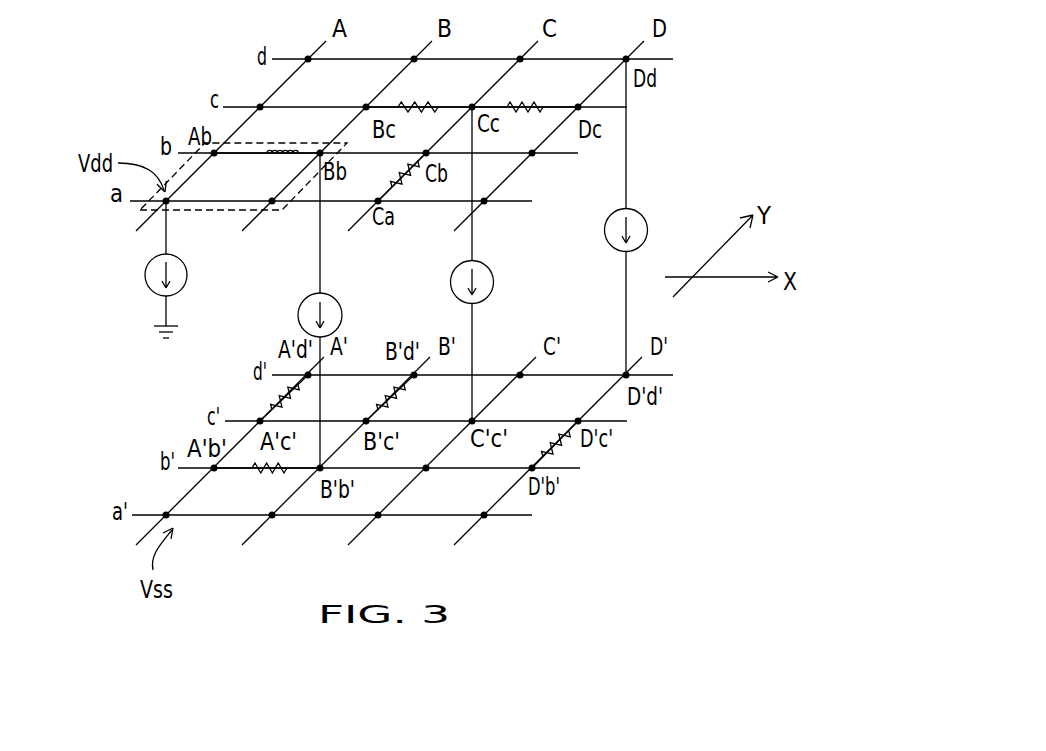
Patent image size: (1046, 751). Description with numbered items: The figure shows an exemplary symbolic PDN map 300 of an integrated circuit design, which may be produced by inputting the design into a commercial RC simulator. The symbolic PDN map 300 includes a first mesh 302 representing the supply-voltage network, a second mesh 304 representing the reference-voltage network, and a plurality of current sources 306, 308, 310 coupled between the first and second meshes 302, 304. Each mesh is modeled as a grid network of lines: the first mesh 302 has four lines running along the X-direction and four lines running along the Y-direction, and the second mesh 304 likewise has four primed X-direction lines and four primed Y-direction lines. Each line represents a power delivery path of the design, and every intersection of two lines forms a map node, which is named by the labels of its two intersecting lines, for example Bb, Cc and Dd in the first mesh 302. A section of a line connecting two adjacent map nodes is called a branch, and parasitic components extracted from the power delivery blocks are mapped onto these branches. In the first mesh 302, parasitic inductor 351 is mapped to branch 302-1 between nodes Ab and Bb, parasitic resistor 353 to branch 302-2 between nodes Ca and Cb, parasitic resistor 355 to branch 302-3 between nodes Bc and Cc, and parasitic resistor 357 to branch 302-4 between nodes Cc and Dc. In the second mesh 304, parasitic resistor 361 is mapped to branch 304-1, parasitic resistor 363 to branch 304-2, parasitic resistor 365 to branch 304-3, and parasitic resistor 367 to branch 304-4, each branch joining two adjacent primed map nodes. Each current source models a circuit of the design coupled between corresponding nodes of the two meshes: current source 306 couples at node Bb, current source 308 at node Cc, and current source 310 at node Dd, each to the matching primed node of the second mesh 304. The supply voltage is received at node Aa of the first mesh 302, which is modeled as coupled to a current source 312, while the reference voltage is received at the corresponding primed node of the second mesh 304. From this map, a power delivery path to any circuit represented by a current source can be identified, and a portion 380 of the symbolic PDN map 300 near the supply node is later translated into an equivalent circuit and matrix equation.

The symbolic PDN map 300 is at (735, 583).
The first mesh 302 is at (430, 136).
The branch 302-1 is at (268, 151).
The branch 302-2 is at (388, 188).
The branch 302-3 is at (399, 104).
The branch 302-4 is at (507, 104).
The second mesh 304 is at (412, 451).
The branch 304-1 is at (237, 469).
The branch 304-2 is at (270, 408).
The branch 304-3 is at (376, 406).
The branch 304-4 is at (535, 469).
The current source 306 is at (298, 315).
The current source 308 is at (452, 282).
The current source 310 is at (605, 230).
The current source 312 is at (143, 275).
The parasitic inductor 351 is at (270, 157).
The parasitic resistor 353 is at (388, 174).
The parasitic resistor 355 is at (416, 111).
The parasitic resistor 357 is at (523, 111).
The parasitic resistor 361 is at (267, 486).
The parasitic resistor 363 is at (292, 404).
The parasitic resistor 365 is at (405, 401).
The parasitic resistor 367 is at (542, 441).
The portion 380 is at (213, 210).